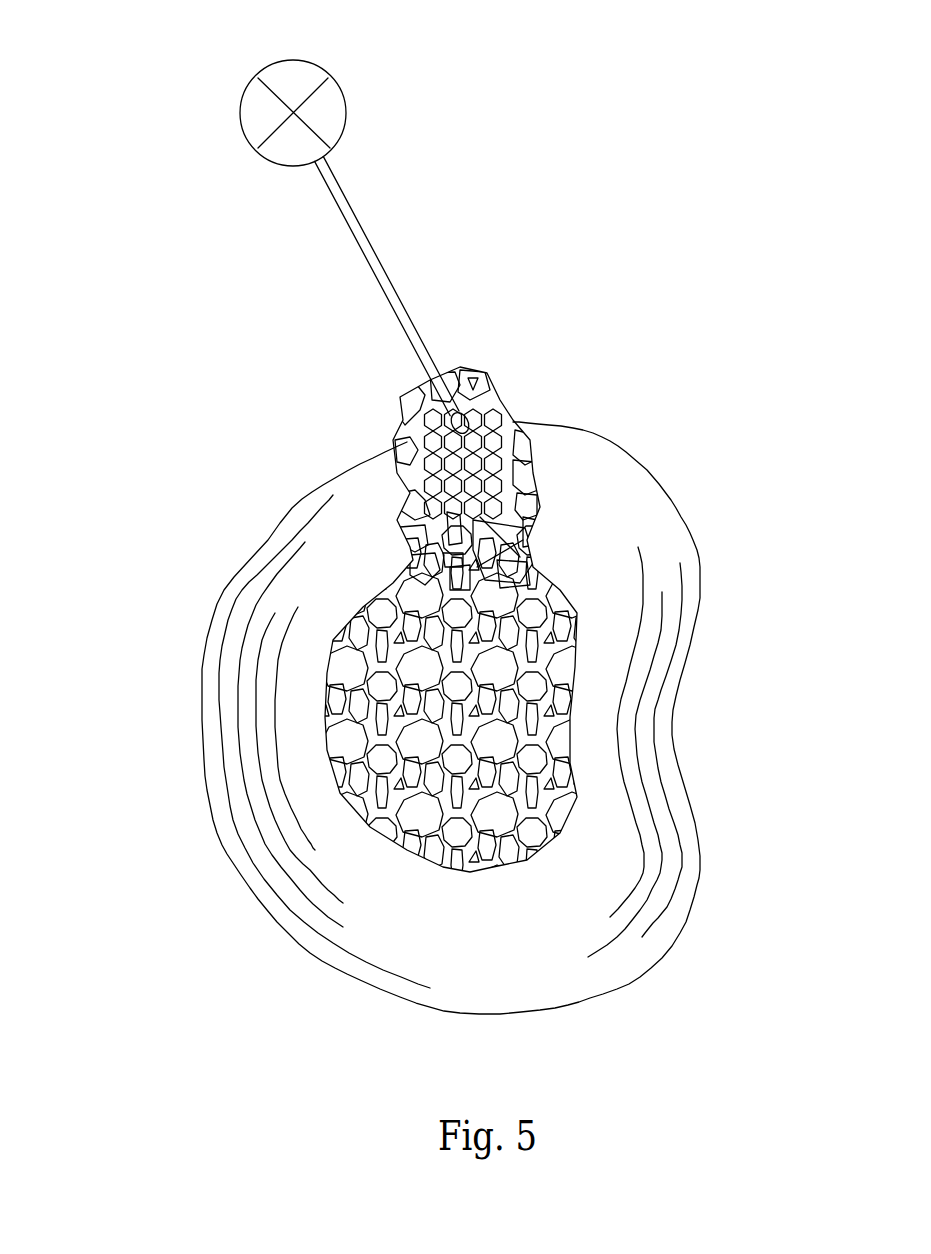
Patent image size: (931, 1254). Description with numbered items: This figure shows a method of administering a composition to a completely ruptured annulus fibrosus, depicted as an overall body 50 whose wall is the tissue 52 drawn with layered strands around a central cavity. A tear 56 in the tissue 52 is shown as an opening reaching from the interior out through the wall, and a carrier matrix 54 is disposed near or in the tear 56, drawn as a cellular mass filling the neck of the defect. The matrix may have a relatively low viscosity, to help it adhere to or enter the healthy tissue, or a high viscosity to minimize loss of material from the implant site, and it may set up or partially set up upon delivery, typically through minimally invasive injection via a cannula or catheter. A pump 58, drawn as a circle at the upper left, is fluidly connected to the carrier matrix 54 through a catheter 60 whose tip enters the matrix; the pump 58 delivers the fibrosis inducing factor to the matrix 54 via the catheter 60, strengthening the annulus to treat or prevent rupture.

The aneurysm sac wall 50 is at (203, 883).
The tissue 52 is at (648, 515).
The carrier matrix 54 is at (427, 413).
The tear 56 is at (397, 460).
The pump 58 is at (241, 137).
The catheter 60 is at (385, 250).